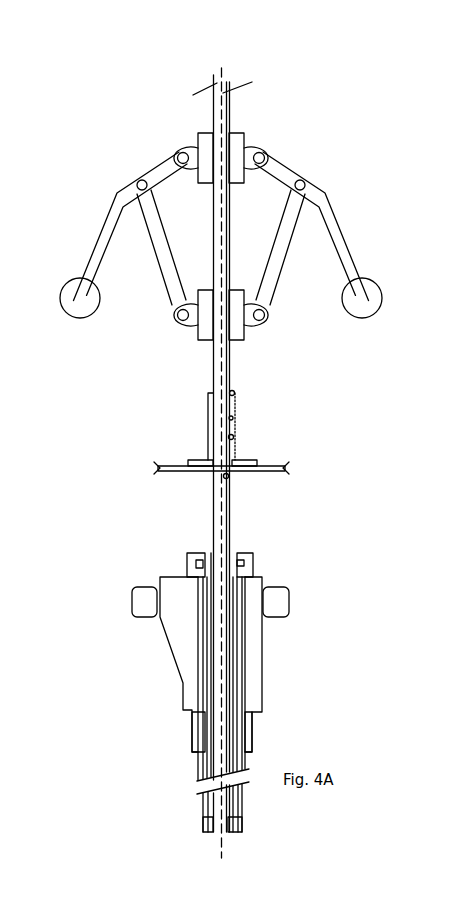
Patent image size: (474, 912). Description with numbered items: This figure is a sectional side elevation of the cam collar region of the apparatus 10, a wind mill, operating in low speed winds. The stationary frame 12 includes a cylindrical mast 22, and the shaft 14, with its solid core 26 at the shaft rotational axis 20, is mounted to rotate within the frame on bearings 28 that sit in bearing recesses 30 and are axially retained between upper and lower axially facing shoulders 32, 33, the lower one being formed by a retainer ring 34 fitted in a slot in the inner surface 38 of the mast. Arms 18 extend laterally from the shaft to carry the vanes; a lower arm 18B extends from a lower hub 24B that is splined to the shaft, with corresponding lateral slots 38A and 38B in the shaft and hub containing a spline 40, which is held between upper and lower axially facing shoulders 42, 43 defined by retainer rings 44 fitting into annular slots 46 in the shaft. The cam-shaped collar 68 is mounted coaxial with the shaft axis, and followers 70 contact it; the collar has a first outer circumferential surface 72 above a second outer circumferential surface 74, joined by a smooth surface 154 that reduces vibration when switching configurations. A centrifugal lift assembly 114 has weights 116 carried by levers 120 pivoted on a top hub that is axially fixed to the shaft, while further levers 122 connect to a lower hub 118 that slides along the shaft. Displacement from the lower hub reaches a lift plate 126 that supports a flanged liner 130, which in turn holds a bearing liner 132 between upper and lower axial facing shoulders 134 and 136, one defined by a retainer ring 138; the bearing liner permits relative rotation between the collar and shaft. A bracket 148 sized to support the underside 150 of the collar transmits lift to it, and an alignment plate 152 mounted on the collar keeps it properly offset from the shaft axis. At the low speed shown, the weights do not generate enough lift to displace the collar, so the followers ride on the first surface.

The apparatus 10 is at (320, 108).
The frame 12 is at (173, 463).
The mast 22 is at (207, 768).
The shaft 14 is at (213, 372).
The arm 18 is at (243, 448).
The lower arm 18B is at (278, 465).
The shaft rotational axis 20 is at (245, 216).
The lower hub 24B is at (238, 432).
The solid core 26 is at (230, 365).
The bearing 28 is at (270, 693).
The bearing recess 30 is at (240, 555).
The upper axially facing shoulder 32 is at (210, 823).
The lower axially facing shoulder 33 is at (222, 675).
The retainer ring 34 is at (205, 560).
The inner surface 38 is at (245, 668).
The lateral slot 38A is at (237, 226).
The lateral slot 38B is at (233, 418).
The spline 40 is at (233, 455).
The upper axially facing shoulder 42 is at (280, 382).
The lower axially facing shoulder 43 is at (229, 477).
The retainer ring 44 is at (280, 382).
The annular slot 46 is at (236, 393).
The collar 68 is at (263, 691).
The follower 70 is at (133, 602).
The first outer circumferential surface 72 is at (157, 601).
The second outer circumferential surface 74 is at (180, 683).
The centrifugal lift assembly 114 is at (236, 222).
The weight 116 is at (243, 143).
The lower hub 118 is at (275, 313).
The lever 120 is at (332, 210).
The lever 122 is at (287, 247).
The lift plate 126 is at (258, 579).
The flanged liner 130 is at (250, 551).
The bearing liner 132 is at (248, 623).
The upper axial facing shoulder 134 is at (200, 566).
The lower axial facing shoulder 136 is at (200, 745).
The retainer ring 138 is at (141, 732).
The bracket 148 is at (253, 745).
The underside 150 is at (258, 733).
The alignment plate 152 is at (160, 579).
The smooth surface 154 is at (167, 647).